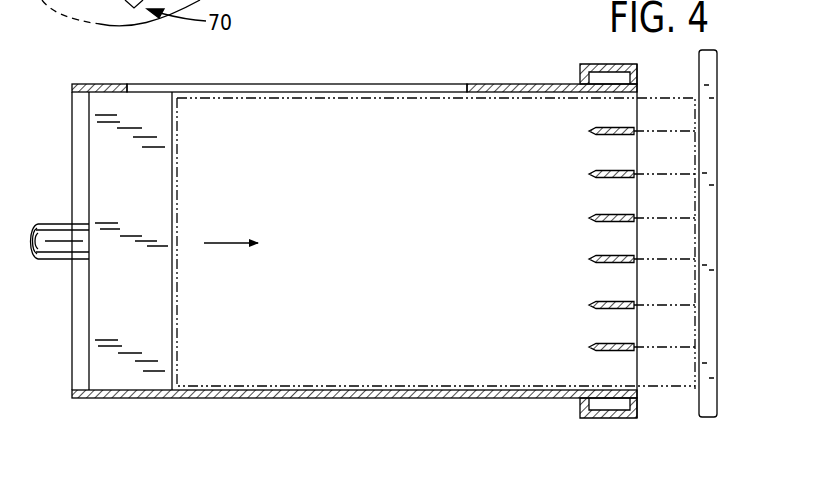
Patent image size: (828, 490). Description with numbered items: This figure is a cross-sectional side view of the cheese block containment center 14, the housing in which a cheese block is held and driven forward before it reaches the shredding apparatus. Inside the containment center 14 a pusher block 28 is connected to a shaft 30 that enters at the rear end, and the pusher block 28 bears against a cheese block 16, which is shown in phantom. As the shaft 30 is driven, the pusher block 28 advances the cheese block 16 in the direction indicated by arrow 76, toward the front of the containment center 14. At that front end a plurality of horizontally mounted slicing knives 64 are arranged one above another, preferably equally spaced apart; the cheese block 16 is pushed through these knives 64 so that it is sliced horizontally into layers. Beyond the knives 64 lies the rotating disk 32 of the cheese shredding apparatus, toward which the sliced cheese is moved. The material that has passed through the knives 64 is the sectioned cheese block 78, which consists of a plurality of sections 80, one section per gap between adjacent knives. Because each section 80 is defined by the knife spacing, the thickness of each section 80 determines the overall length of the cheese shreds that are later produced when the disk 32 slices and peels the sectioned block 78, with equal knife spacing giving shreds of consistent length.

The cheese block containment center 14 is at (302, 398).
The cheese block 16 is at (316, 175).
The pusher block 28 is at (147, 199).
The shaft 30 is at (53, 241).
The disk 32 is at (712, 218).
The slicing knives 64 is at (601, 171).
The arrow 76 is at (235, 245).
The sectioned cheese block 78 is at (661, 398).
The sections 80 is at (685, 152).